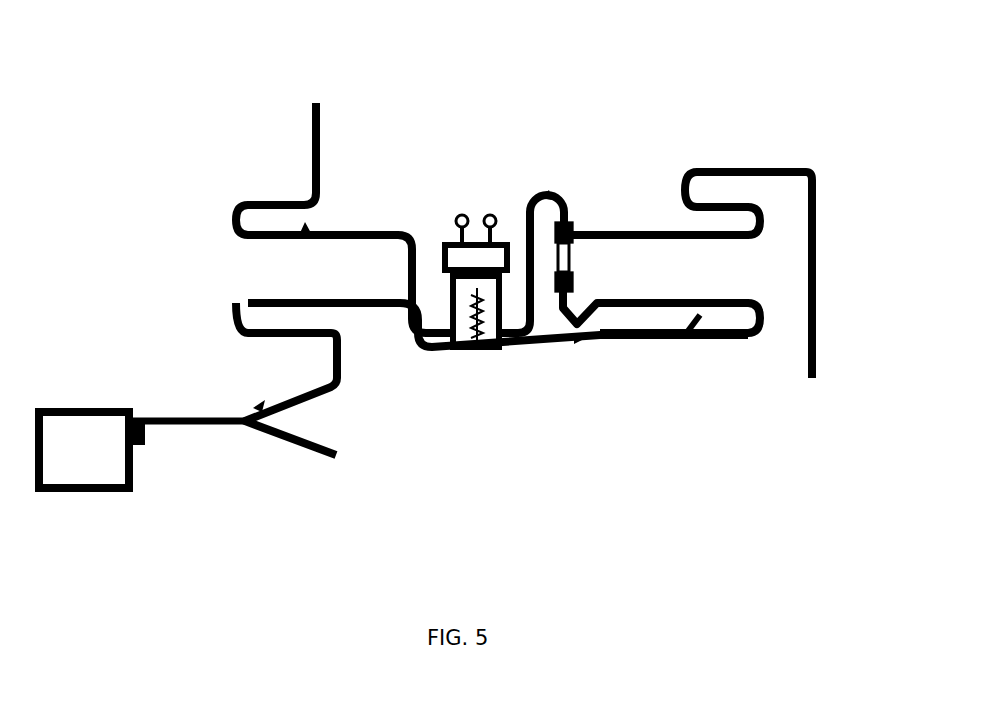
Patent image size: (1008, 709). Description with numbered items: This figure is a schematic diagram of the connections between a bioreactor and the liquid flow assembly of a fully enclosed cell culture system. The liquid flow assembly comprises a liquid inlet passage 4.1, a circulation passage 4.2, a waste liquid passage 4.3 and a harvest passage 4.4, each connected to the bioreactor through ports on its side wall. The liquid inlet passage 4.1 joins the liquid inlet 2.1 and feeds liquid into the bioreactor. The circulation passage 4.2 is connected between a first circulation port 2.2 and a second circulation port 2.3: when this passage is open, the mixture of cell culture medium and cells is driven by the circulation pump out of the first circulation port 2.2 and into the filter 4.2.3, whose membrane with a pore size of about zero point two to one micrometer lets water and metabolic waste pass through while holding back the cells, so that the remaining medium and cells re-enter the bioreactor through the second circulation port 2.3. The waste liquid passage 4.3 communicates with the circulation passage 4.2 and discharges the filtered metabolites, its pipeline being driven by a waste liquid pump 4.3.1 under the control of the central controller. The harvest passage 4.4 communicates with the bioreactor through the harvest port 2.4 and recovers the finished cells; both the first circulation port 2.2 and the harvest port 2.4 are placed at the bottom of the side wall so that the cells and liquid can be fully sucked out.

The liquid inlet passage 4.1 is at (322, 138).
The liquid inlet 2.1 is at (437, 325).
The second circulation port 2.3 is at (513, 325).
The filter 4.2.3 is at (567, 222).
The waste liquid pump 4.3.1 is at (635, 228).
The waste liquid passage 4.3 is at (798, 165).
The harvest port 2.4 is at (442, 357).
The first circulation port 2.2 is at (508, 357).
The circulation passage 4.2 is at (660, 335).
The harvest passage 4.4 is at (246, 428).